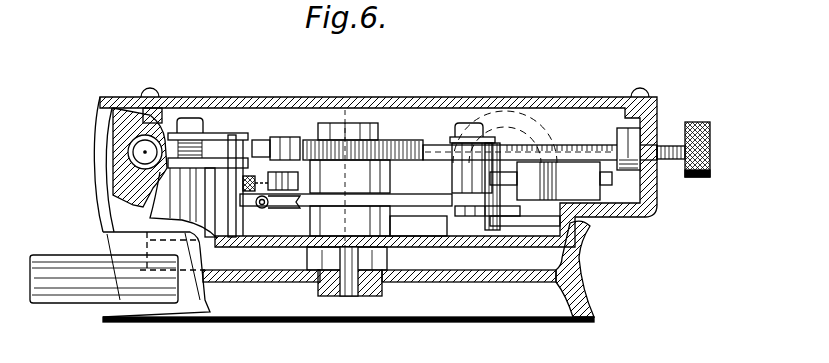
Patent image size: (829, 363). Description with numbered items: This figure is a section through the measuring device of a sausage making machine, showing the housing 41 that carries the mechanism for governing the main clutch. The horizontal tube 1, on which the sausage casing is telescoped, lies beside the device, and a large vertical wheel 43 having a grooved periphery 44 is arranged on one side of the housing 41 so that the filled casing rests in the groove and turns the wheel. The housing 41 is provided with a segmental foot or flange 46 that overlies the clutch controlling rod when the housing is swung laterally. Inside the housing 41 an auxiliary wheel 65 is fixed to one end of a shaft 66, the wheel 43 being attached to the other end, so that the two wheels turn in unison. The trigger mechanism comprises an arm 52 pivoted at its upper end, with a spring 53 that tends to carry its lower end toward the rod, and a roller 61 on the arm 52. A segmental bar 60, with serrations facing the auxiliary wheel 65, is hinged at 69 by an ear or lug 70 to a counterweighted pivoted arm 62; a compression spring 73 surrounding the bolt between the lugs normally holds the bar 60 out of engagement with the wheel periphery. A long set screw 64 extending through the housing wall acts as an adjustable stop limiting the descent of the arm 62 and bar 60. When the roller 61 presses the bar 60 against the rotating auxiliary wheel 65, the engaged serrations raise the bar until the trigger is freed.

The horizontal tube 1 is at (62, 303).
The housing 41 is at (572, 97).
The vertical wheel 43 is at (560, 303).
The grooved periphery 44 is at (588, 287).
The segmental foot or flange 46 is at (103, 198).
The arm 52 is at (213, 133).
The spring 53 is at (195, 147).
The bar 60 is at (272, 150).
The roller 61 is at (254, 148).
The pivoted arm 62 is at (408, 195).
The set screw 64 is at (710, 147).
The auxiliary wheel 65 is at (408, 146).
The shaft 66 is at (343, 297).
The hinge 69 is at (262, 209).
The ear or lug 70 is at (286, 150).
The compression spring 73 is at (283, 208).